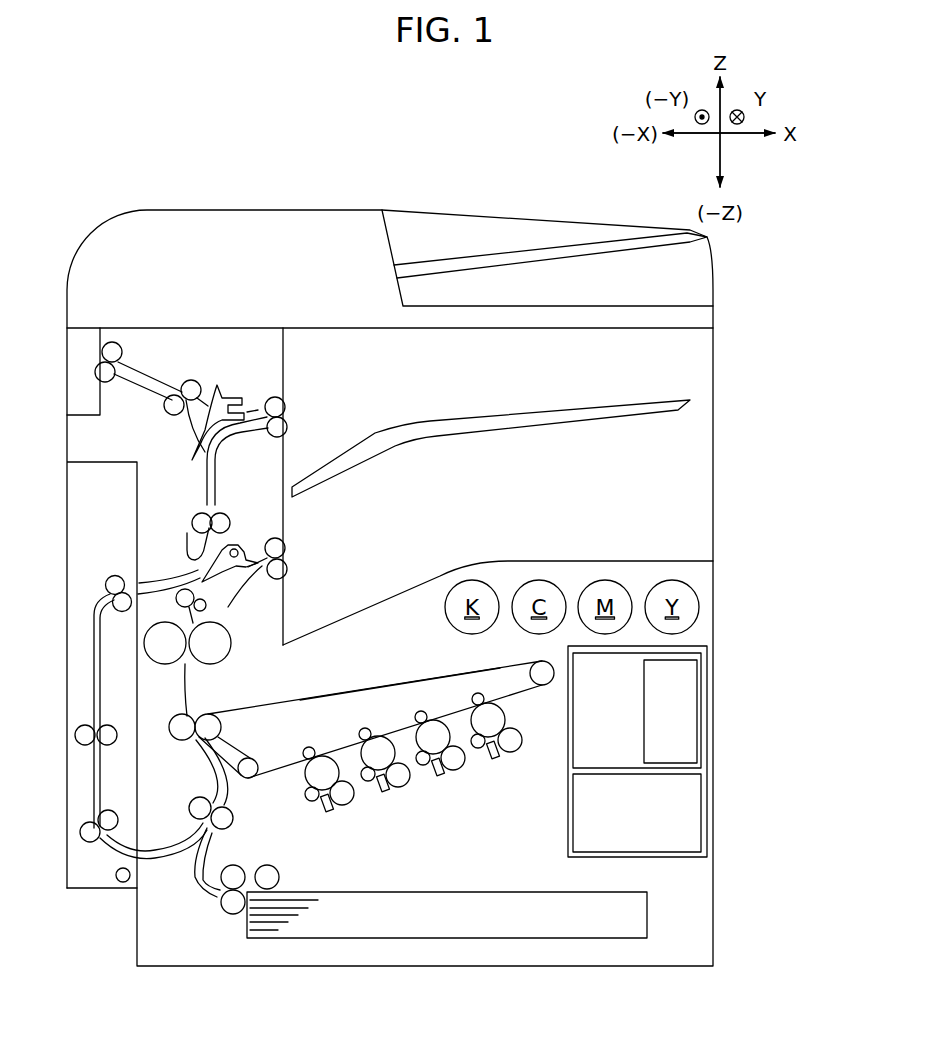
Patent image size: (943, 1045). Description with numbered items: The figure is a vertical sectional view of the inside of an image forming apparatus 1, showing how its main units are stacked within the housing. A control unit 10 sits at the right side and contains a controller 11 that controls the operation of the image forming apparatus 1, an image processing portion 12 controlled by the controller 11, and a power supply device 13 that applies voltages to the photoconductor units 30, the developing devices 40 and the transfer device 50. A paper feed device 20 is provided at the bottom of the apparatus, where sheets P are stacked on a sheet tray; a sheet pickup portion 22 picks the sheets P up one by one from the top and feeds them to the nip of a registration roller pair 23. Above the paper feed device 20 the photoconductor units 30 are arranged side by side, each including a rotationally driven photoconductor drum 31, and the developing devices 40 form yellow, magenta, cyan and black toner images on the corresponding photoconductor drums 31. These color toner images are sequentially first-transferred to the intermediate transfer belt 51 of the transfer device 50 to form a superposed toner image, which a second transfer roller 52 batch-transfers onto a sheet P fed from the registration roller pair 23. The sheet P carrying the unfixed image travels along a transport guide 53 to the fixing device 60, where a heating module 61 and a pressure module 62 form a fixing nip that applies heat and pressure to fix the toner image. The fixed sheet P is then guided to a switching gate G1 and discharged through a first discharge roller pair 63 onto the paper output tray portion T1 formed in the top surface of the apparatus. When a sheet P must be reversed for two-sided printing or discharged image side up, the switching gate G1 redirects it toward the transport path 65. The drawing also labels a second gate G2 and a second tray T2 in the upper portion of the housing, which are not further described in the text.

The image forming apparatus 1 is at (152, 188).
The control unit 10 is at (710, 683).
The controller 11 is at (605, 760).
The image processing portion 12 is at (673, 737).
The power supply device 13 is at (673, 808).
The paper feed device 20 is at (295, 885).
The sheet pickup portion 22 is at (210, 915).
The registration roller pair 23 is at (228, 818).
The photoconductor units 30 is at (472, 727).
The photoconductor drum 31 is at (488, 720).
The developing devices 40 is at (513, 753).
The transfer device 50 is at (288, 688).
The intermediate transfer belt 51 is at (362, 685).
The second transfer roller 52 is at (185, 733).
The transport guide 53 is at (188, 688).
The fixing device 60 is at (250, 612).
The heating module 61 is at (213, 658).
The pressure module 62 is at (167, 656).
The first discharge roller pair 63 is at (298, 547).
The transport path 65 is at (200, 482).
The switching gate G1 is at (245, 555).
The second gate G2 is at (227, 405).
The paper output tray portion T1 is at (513, 555).
The second discharge tray T2 is at (443, 420).
The sheet P is at (310, 927).